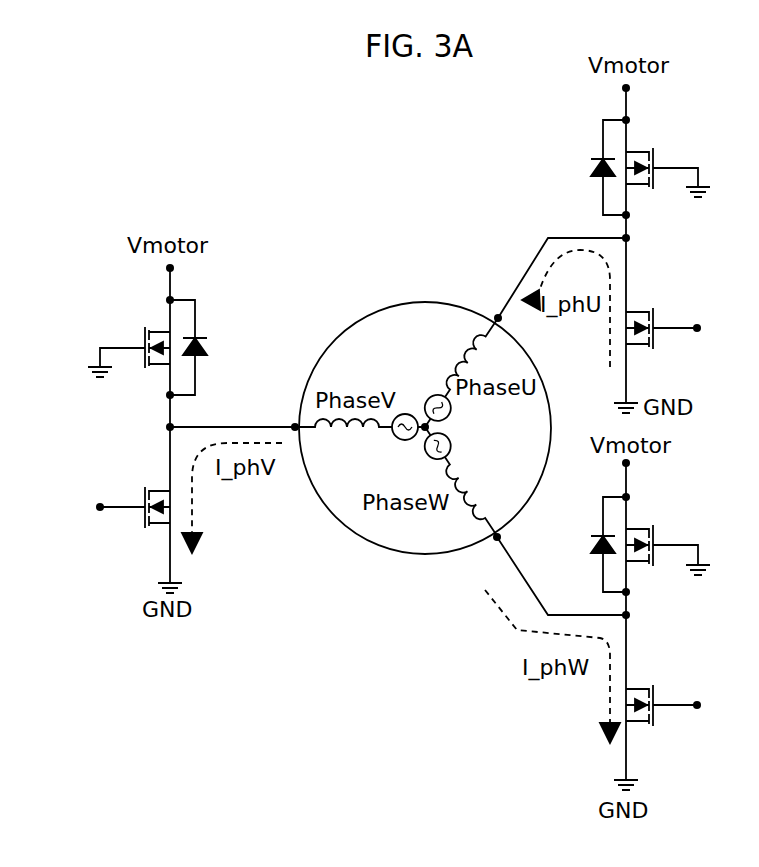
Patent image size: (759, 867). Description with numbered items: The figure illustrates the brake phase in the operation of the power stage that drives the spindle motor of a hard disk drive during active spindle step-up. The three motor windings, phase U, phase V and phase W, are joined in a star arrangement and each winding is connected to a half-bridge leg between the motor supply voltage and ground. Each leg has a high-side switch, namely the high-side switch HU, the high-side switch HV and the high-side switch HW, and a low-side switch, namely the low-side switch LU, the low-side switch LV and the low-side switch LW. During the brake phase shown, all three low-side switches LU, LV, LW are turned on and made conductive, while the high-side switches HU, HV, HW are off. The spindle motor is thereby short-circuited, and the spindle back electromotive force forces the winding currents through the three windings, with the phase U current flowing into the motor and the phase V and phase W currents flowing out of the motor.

The high-side switch HV is at (185, 326).
The low-side switch LV is at (158, 523).
The high-side switch HU is at (625, 157).
The low-side switch LU is at (633, 337).
The high-side switch HW is at (625, 538).
The low-side switch LW is at (632, 720).